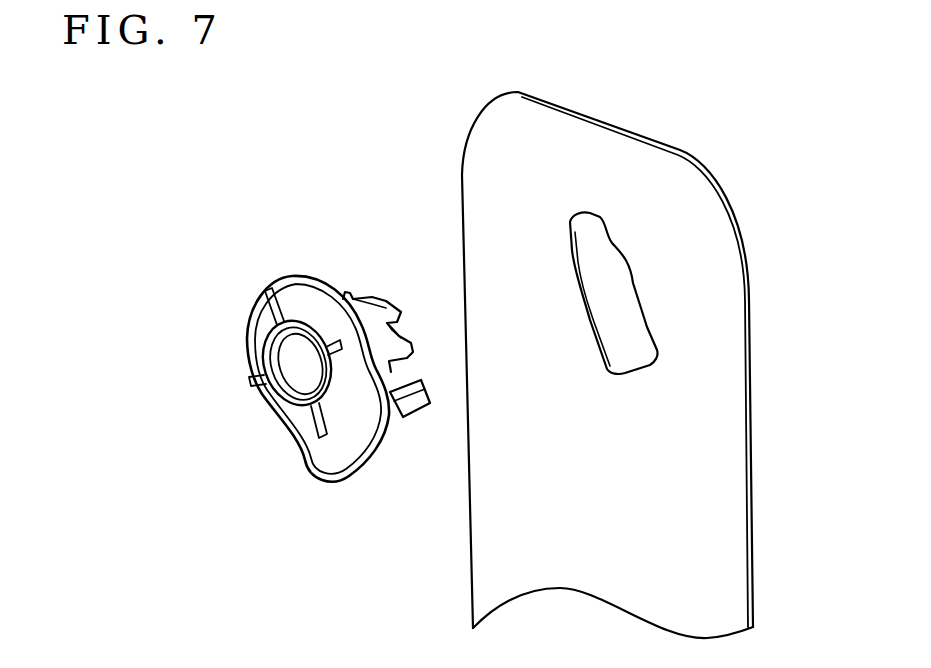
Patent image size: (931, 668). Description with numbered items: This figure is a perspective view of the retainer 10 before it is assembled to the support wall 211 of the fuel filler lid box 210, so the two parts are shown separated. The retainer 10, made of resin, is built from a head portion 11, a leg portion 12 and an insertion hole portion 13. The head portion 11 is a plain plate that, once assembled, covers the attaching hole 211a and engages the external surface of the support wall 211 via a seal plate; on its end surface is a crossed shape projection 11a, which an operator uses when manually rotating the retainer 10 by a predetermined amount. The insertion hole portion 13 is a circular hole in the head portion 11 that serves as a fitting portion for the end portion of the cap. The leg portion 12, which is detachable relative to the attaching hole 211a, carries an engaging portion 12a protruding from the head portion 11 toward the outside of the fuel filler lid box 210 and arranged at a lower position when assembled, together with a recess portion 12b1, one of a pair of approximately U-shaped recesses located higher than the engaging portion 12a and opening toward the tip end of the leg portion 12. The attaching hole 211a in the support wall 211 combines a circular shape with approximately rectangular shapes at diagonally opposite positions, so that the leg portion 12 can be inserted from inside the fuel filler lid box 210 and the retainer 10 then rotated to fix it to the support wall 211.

The retainer 10 is at (310, 276).
The head portion 11 is at (252, 333).
The crossed shape projection 11a is at (312, 425).
The leg portion 12 is at (373, 296).
The engaging portion 12a is at (405, 427).
The recess portion 12b1 is at (394, 324).
The insertion hole portion 13 is at (287, 388).
The fuel filler lid box 210 is at (474, 593).
The support wall 211 is at (748, 470).
The attaching hole 211a is at (630, 262).